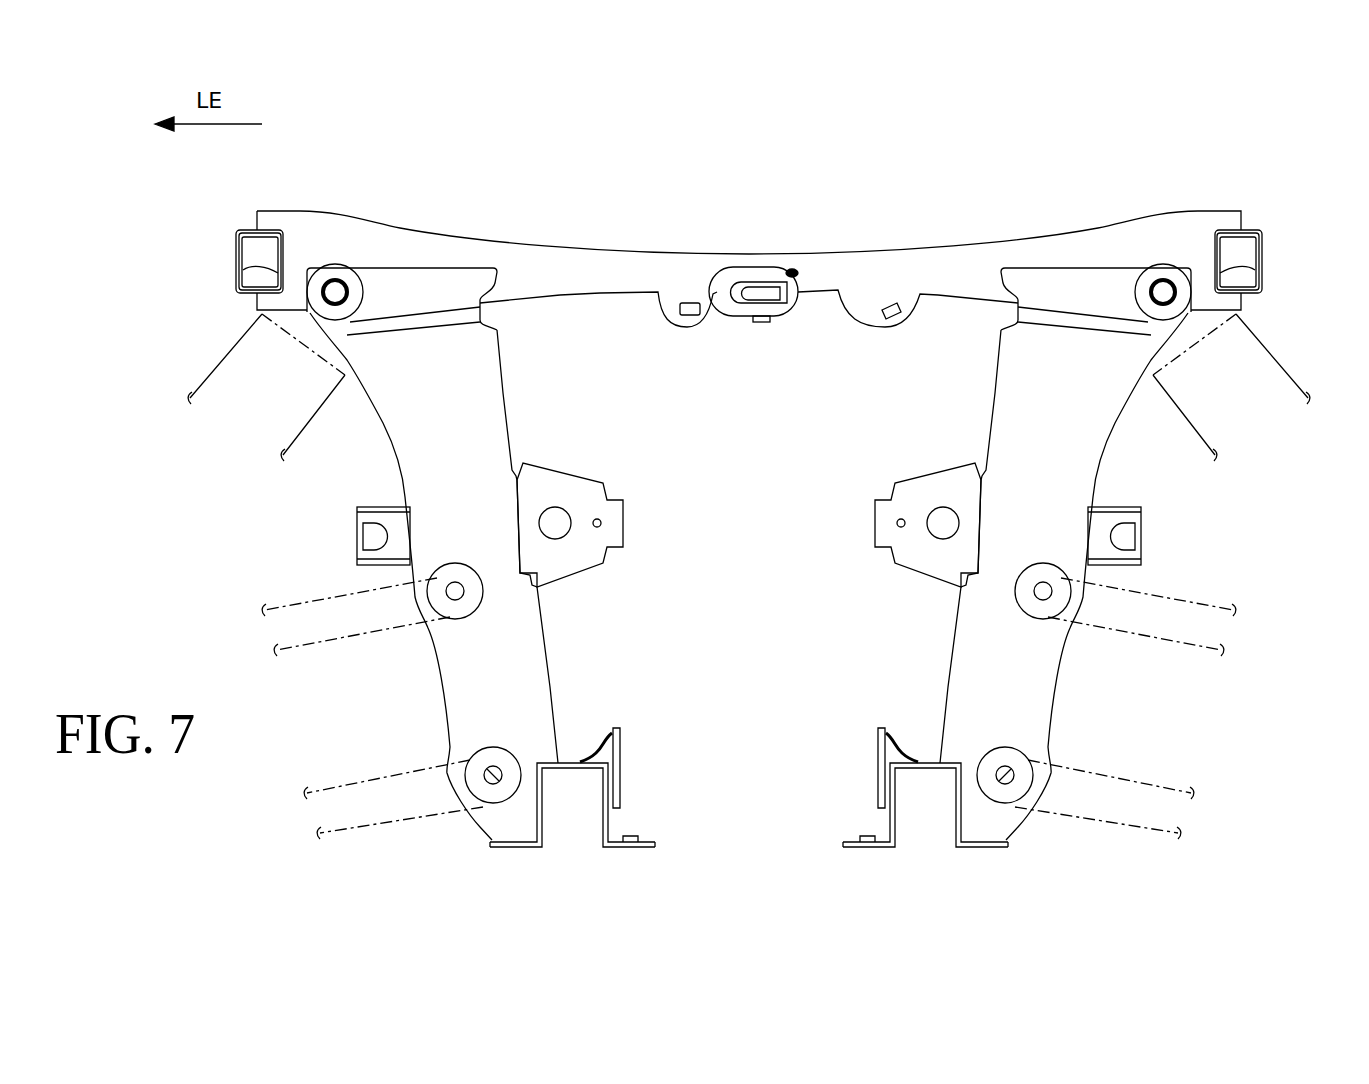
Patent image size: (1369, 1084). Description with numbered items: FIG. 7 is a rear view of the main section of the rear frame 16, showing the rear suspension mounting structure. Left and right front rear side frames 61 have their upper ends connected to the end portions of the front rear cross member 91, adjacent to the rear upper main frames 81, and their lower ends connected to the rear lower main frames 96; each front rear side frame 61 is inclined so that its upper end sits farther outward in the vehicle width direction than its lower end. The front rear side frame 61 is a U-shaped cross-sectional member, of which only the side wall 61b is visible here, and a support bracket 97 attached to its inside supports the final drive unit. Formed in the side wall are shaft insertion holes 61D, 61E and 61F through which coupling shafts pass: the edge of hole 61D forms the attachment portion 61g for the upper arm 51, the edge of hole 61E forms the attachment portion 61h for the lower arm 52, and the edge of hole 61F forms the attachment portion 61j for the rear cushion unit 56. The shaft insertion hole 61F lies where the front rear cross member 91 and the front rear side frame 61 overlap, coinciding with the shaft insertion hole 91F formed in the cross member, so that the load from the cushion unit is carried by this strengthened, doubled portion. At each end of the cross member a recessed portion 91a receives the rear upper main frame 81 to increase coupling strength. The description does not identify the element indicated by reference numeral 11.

The vehicle front structure 11 is at (840, 212).
The rear frame 16 is at (750, 240).
The front rear cross member 91 is at (661, 255).
The recessed portion 91a is at (250, 272).
The shaft insertion hole 91F is at (749, 292).
The rear upper main frame 81 is at (236, 248).
The rear cushion unit 56 is at (225, 360).
The front rear side frame 61 is at (381, 423).
The side wall 61b is at (433, 472).
The shaft insertion hole 61F is at (348, 288).
The attachment portion 61j is at (380, 292).
The support bracket 97 is at (613, 523).
The attachment portion 61g is at (502, 606).
The shaft insertion hole 61D is at (455, 600).
The upper arm 51 is at (328, 655).
The attachment portion 61h is at (518, 742).
The shaft insertion hole 61E is at (496, 785).
The lower arm 52 is at (340, 830).
The rear lower main frame 96 is at (633, 848).